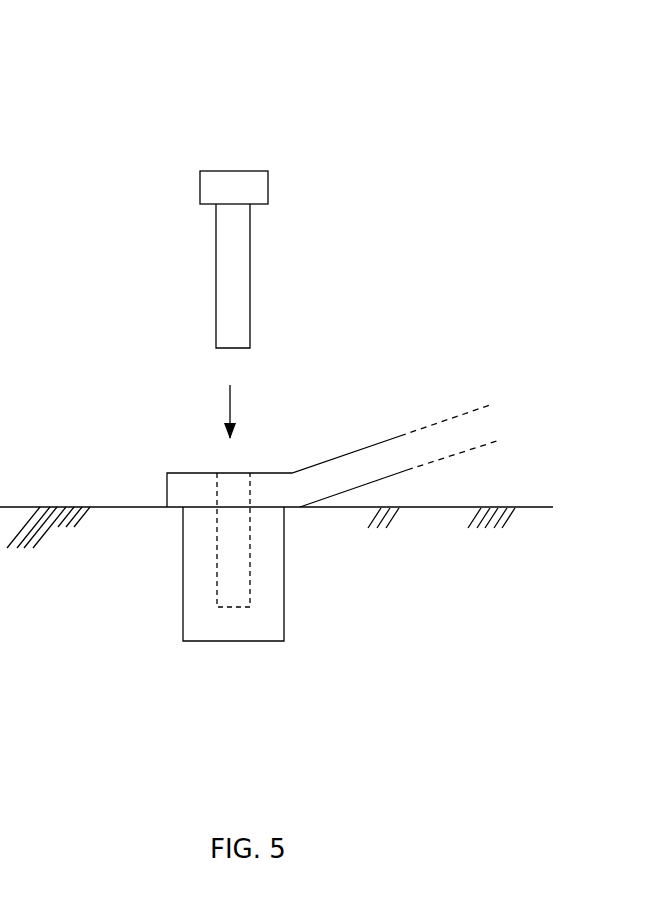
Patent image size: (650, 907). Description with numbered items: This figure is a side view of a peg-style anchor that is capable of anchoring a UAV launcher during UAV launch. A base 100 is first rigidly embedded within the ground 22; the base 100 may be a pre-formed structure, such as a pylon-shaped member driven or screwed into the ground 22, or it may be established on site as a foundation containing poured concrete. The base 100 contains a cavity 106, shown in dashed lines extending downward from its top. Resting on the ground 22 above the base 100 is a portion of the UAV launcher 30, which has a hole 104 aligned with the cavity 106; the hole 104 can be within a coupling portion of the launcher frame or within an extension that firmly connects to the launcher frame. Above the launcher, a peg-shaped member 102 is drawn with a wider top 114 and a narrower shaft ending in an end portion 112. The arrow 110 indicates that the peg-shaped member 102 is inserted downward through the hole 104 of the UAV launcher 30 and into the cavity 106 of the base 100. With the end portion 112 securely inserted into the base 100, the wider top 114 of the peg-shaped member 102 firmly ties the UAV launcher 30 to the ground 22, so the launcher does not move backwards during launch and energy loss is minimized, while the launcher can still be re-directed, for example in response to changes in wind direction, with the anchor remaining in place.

The wider top 114 is at (194, 185).
The peg-shaped member 102 is at (215, 288).
The end portion 112 is at (208, 334).
The arrow 110 is at (226, 402).
The hole 104 is at (219, 484).
The UAV launcher 30 is at (355, 462).
The cavity 106 is at (222, 573).
The base 100 is at (183, 605).
The ground 22 is at (373, 611).